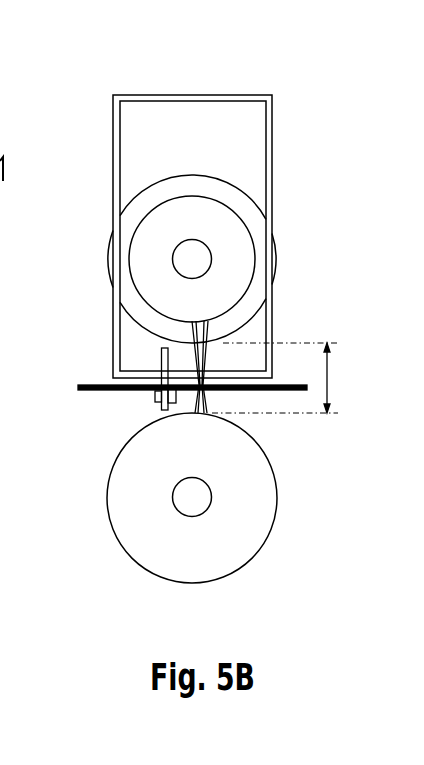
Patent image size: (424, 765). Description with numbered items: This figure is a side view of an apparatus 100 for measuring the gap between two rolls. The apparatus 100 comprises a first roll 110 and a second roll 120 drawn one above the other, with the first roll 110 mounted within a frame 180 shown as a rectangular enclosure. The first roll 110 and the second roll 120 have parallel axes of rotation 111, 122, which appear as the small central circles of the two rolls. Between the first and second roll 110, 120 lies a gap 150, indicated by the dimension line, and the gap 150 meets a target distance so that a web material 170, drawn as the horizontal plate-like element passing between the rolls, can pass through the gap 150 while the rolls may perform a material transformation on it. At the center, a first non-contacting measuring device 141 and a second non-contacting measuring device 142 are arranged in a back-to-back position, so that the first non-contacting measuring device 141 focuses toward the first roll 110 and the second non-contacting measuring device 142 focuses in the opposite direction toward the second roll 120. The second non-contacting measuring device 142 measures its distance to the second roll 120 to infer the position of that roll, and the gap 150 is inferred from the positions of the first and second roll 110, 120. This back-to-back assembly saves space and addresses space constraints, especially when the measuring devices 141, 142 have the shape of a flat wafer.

The apparatus 100 is at (338, 186).
The first roll 110 is at (276, 250).
The axis of rotation of the first roll 111 is at (197, 240).
The second roll 120 is at (257, 552).
The axis of rotation of the second roll 122 is at (188, 517).
The first non-contacting measuring device 141 is at (205, 370).
The second non-contacting measuring device 142 is at (205, 392).
The gap 150 is at (292, 378).
The web material 170 is at (110, 388).
The frame 180 is at (272, 163).